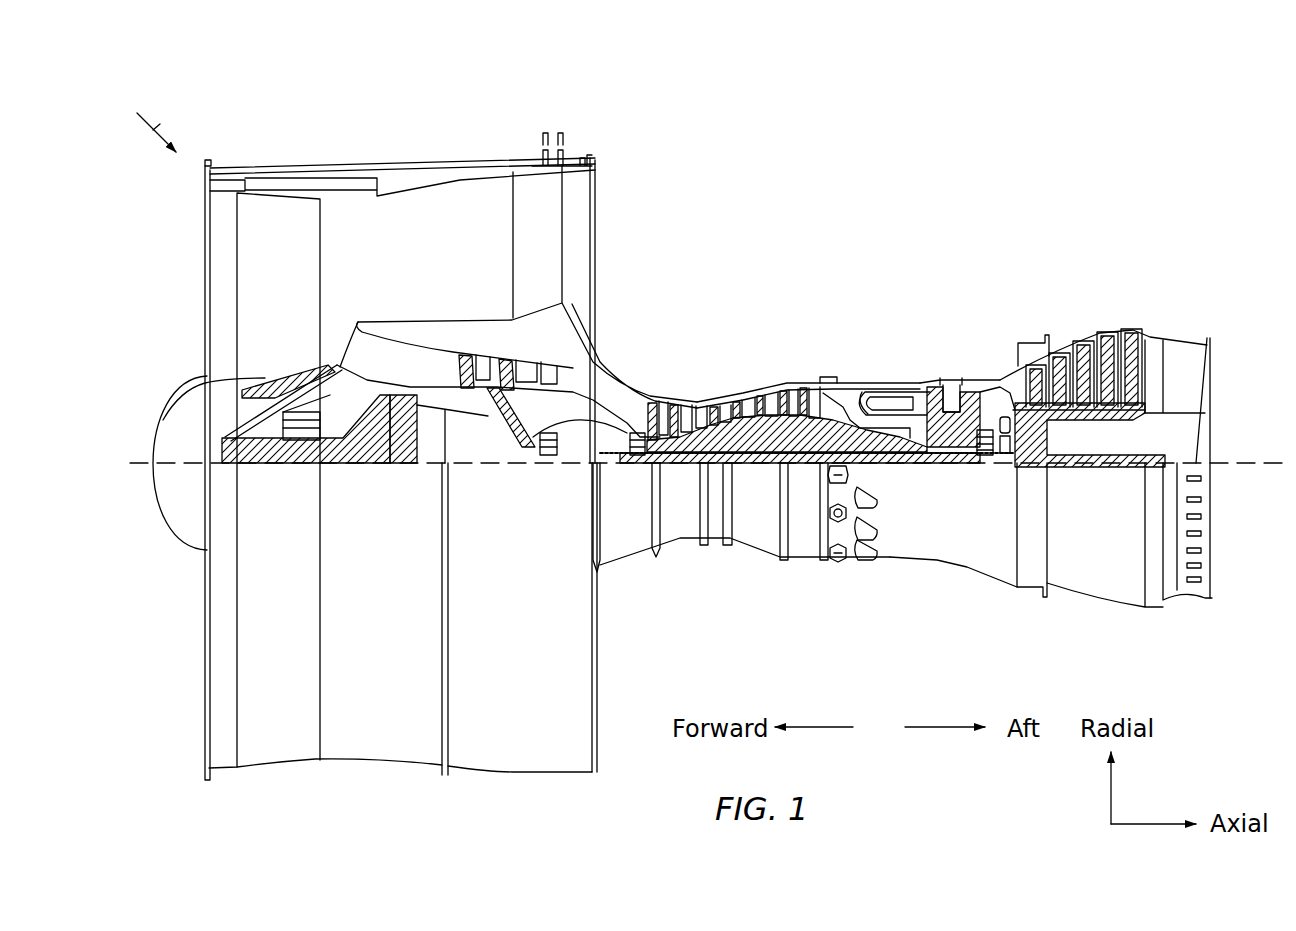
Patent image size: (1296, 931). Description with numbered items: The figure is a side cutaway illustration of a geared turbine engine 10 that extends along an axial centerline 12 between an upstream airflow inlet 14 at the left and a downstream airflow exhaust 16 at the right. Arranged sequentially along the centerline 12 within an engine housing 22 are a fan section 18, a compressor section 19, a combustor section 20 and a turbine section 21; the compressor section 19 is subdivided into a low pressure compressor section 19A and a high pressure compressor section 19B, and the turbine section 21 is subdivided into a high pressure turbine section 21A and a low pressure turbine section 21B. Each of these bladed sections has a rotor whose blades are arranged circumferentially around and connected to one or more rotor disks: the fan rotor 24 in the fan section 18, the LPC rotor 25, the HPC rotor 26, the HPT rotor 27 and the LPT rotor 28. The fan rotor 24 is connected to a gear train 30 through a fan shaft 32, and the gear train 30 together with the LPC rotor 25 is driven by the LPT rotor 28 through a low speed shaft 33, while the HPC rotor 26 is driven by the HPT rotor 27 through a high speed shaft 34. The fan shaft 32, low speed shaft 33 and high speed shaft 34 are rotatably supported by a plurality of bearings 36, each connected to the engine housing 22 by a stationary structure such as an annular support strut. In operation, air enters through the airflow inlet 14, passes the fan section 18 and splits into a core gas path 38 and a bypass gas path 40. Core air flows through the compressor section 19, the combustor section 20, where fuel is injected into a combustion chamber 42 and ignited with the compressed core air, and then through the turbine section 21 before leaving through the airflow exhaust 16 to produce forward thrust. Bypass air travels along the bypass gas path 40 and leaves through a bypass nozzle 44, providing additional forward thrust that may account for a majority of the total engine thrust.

The geared turbine engine 10 is at (142, 118).
The axial centerline 12 is at (1270, 470).
The upstream airflow inlet 14 is at (205, 237).
The downstream airflow exhaust 16 is at (1212, 370).
The fan section 18 is at (208, 148).
The compressor section 19 is at (437, 90).
The low pressure compressor (LPC) section 19A is at (437, 133).
The high pressure compressor (HPC) section 19B is at (618, 313).
The combustor section 20 is at (822, 313).
The turbine section 21 is at (925, 250).
The high pressure turbine (HPT) section 21A is at (1003, 313).
The low pressure turbine (LPT) section 21B is at (1172, 313).
The engine housing 22 is at (606, 578).
The fan rotor 24 is at (207, 383).
The LPC rotor 25 is at (508, 422).
The HPC rotor 26 is at (755, 432).
The HPT rotor 27 is at (955, 463).
The LPT rotor 28 is at (1090, 413).
The gear train 30 is at (400, 465).
The fan shaft 32 is at (270, 462).
The low speed shaft 33 is at (800, 470).
The high speed shaft 34 is at (887, 457).
The bearings 36 is at (325, 437).
The core gas path 38 is at (612, 397).
The bypass gas path 40 is at (440, 266).
The combustion chamber 42 is at (880, 398).
The bypass nozzle 44 is at (596, 218).